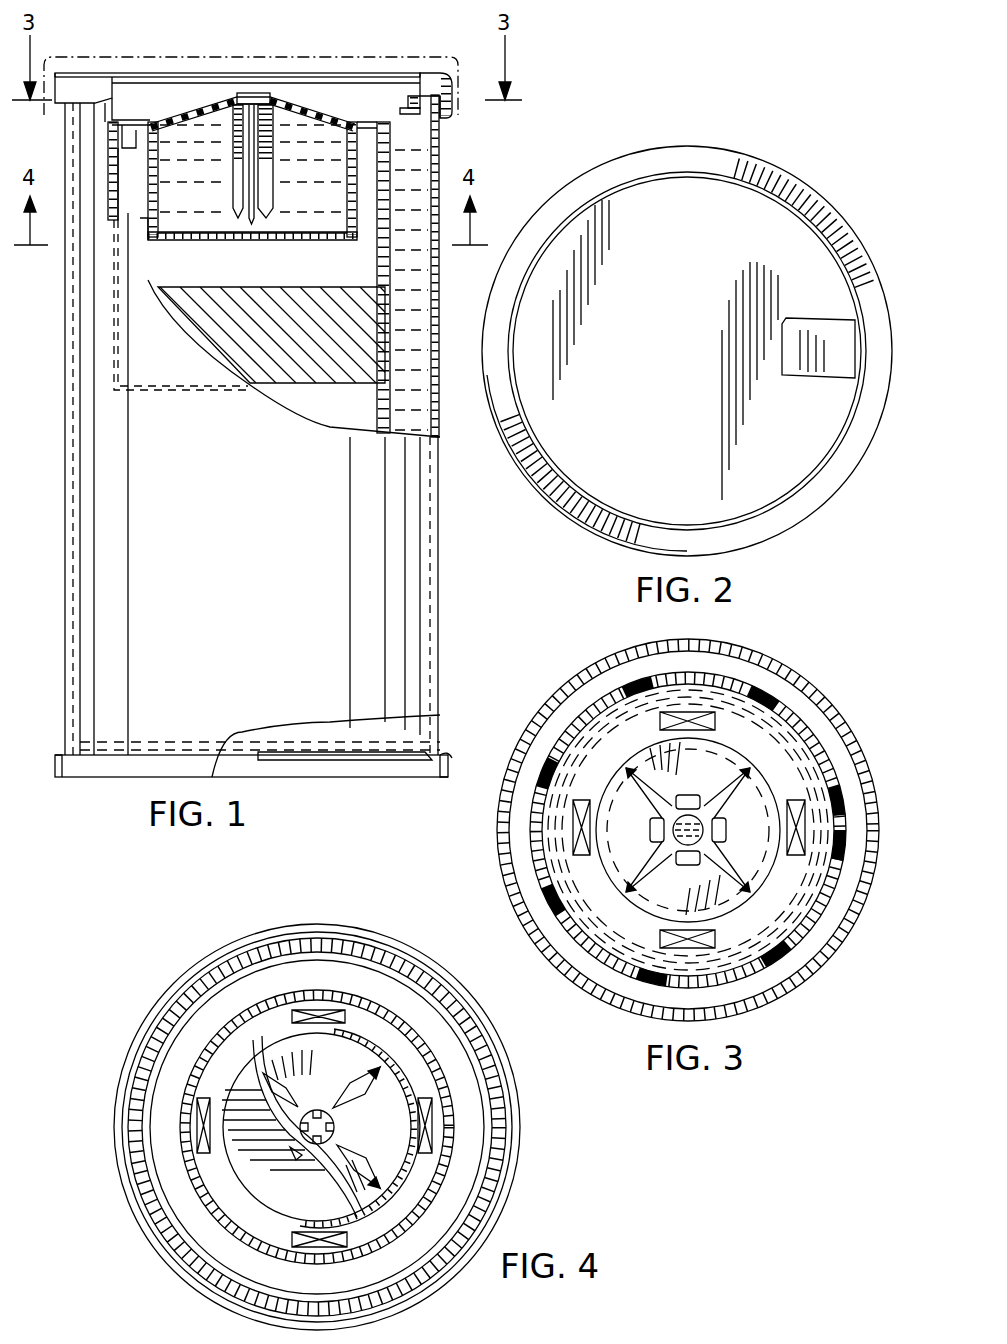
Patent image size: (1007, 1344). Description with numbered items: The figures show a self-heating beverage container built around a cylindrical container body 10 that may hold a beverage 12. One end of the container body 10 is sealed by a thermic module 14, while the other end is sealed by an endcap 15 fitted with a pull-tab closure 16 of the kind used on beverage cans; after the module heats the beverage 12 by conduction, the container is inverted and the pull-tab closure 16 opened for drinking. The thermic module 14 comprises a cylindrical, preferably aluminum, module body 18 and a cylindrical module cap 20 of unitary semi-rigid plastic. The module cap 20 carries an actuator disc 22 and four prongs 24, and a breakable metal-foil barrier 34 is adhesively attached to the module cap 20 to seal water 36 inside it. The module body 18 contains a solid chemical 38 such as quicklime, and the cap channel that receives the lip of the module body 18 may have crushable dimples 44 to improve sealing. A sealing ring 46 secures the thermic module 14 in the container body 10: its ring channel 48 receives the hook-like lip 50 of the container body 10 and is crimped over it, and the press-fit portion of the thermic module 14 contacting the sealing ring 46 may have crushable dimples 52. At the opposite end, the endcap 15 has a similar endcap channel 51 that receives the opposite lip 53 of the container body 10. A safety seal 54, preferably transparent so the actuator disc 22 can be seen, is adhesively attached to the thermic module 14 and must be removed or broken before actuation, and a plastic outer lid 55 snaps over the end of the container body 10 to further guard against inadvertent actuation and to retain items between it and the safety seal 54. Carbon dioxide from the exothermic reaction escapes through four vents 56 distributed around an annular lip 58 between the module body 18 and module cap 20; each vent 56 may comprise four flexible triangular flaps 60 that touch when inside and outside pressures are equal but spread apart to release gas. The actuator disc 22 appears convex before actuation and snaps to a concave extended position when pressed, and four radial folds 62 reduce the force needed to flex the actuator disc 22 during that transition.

In FIG. 1, the container body 10 is at (65, 375).
In FIG. 3, the container body 10 is at (810, 700).
In FIG. 4, the container body 10 is at (165, 1002).
In FIG. 1, the beverage 12 is at (382, 422).
In FIG. 1, the thermic module 14 is at (398, 342).
In FIG. 3, the thermic module 14 is at (798, 965).
In FIG. 1, the endcap 15 is at (247, 760).
In FIG. 1, the pull-tab closure 16 is at (322, 762).
In FIG. 1, the module body 18 is at (390, 245).
In FIG. 4, the module body 18 is at (447, 1157).
In FIG. 1, the module cap 20 is at (148, 200).
In FIG. 3, the module cap 20 is at (830, 905).
In FIG. 4, the module cap 20 is at (365, 1043).
In FIG. 1, the actuator disc 22 is at (188, 118).
In FIG. 3, the actuator disc 22 is at (645, 760).
In FIG. 4, the actuator disc 22 is at (292, 1065).
In FIG. 1, the prongs 24 is at (240, 216).
In FIG. 3, the prongs 24 is at (688, 830).
In FIG. 4, the prongs 24 is at (336, 1128).
In FIG. 1, the breakable barrier 34 is at (280, 238).
In FIG. 4, the breakable barrier 34 is at (225, 1172).
In FIG. 1, the water 36 is at (326, 186).
In FIG. 1, the solid chemical 38 is at (326, 302).
In FIG. 1, the crushable dimples 44 is at (124, 146).
In FIG. 1, the sealing ring 46 is at (432, 75).
In FIG. 2, the sealing ring 46 is at (812, 490).
In FIG. 1, the ring channel 48 is at (448, 72).
In FIG. 1, the lip 50 is at (452, 97).
In FIG. 1, the endcap channel 51 is at (437, 777).
In FIG. 1, the crushable dimples 52 is at (420, 112).
In FIG. 1, the opposite lip 53 is at (449, 760).
In FIG. 1, the safety seal 54 is at (246, 80).
In FIG. 2, the safety seal 54 is at (735, 215).
In FIG. 1, the outer lid 55 is at (284, 57).
In FIG. 3, the vents 56 is at (586, 828).
In FIG. 4, the vents 56 is at (312, 1008).
In FIG. 1, the annular lip 58 is at (134, 126).
In FIG. 3, the annular lip 58 is at (580, 878).
In FIG. 4, the annular lip 58 is at (275, 1022).
In FIG. 3, the flexible triangular flaps 60 is at (595, 825).
In FIG. 3, the radial folds 62 is at (730, 790).
In FIG. 4, the radial folds 62 is at (360, 1078).